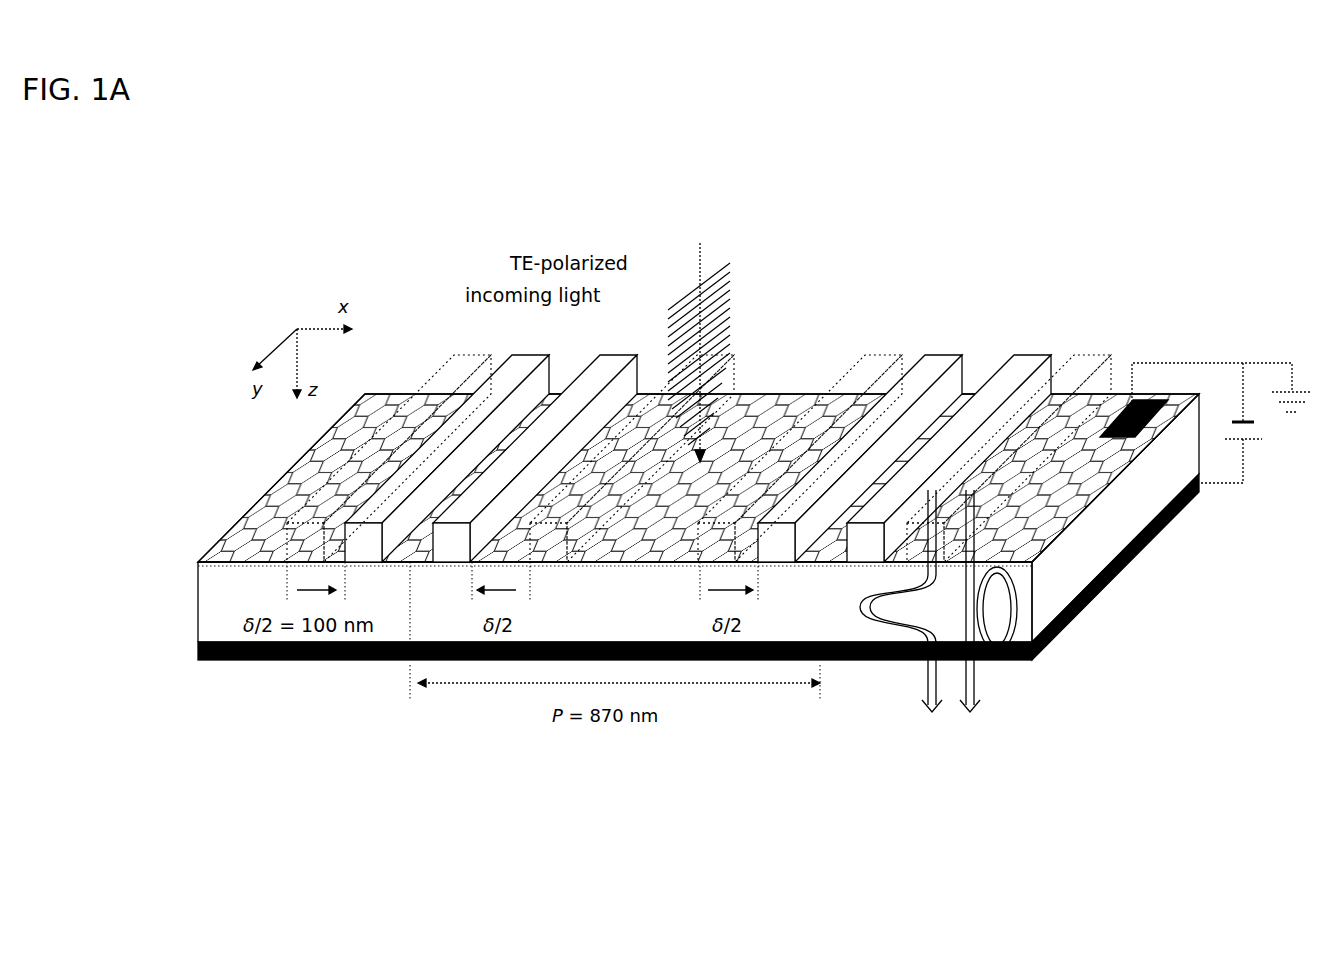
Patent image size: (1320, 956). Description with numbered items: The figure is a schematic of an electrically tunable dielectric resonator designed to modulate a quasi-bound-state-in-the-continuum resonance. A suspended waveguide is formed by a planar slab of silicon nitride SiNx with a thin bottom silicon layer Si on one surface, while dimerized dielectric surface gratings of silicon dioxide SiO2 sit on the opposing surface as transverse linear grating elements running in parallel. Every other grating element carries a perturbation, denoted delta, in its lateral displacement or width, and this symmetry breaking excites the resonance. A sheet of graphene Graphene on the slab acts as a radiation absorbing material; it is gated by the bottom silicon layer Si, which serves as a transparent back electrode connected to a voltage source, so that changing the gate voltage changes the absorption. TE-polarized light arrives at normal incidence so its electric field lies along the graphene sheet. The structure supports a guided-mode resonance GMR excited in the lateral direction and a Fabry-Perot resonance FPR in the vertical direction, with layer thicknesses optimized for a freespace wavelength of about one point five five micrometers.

The graphene sheet Graphene is at (252, 530).
The silicon nitride slab SiNx is at (617, 518).
The bottom silicon layer Si is at (634, 572).
The dimerized surface grating SiO2 is at (1000, 316).
The guided-mode resonance GMR is at (895, 601).
The Fabry-Perot resonance FPR is at (998, 601).